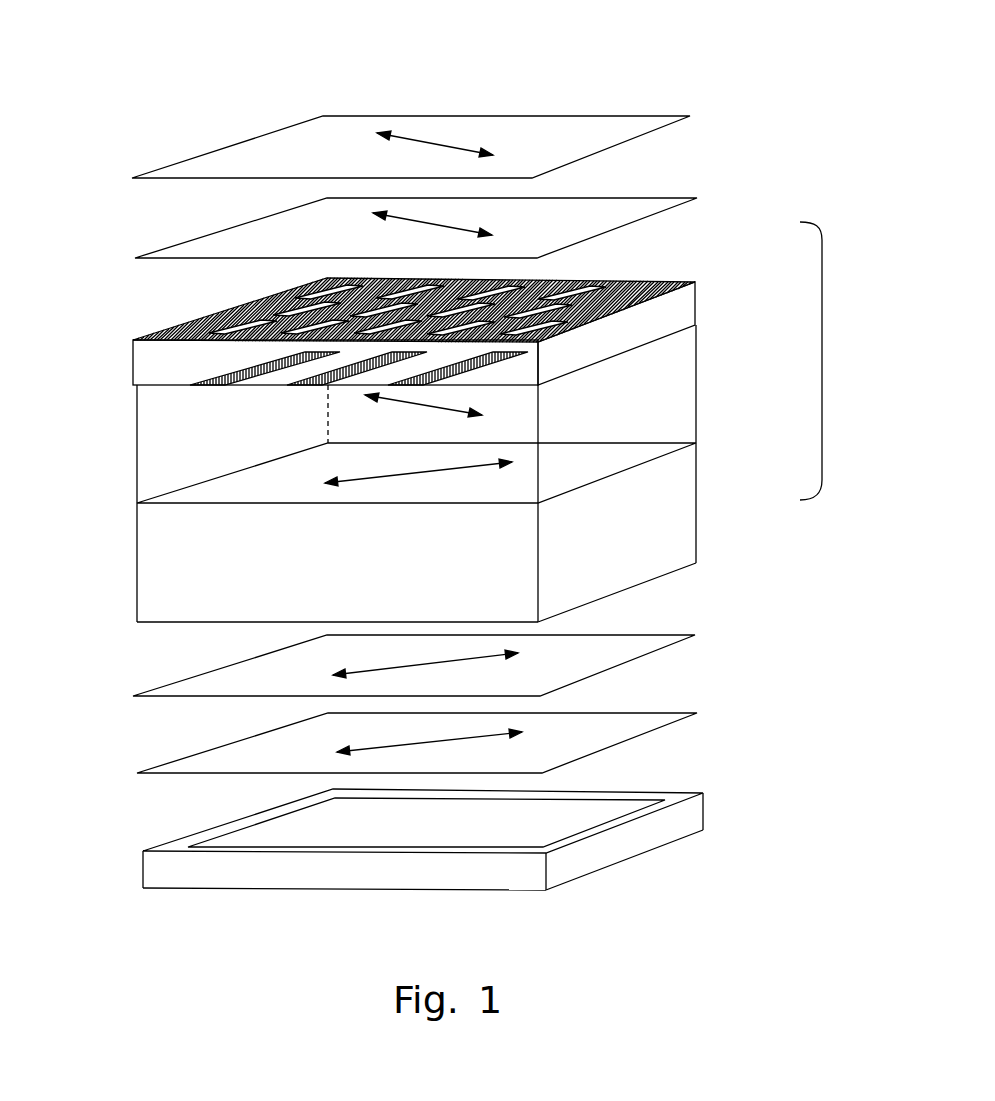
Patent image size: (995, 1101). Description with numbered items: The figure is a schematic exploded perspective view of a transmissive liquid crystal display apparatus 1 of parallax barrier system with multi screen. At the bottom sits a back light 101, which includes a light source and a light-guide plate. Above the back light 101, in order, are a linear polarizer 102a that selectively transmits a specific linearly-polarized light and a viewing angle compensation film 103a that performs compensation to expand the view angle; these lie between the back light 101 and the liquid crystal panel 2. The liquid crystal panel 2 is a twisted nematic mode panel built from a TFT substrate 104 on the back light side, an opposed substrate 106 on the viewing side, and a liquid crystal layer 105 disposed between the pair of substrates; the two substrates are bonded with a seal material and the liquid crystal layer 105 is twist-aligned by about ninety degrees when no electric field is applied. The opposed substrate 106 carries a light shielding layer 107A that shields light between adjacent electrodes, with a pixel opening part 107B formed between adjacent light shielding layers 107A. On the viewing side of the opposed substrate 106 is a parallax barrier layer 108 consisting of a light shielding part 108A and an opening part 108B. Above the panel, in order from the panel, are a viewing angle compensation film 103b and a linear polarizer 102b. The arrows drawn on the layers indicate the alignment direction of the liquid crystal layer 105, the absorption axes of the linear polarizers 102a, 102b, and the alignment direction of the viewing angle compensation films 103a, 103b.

The liquid crystal display apparatus 1 is at (452, 92).
The liquid crystal panel 2 is at (833, 361).
The back light 101 is at (683, 813).
The linear polarizer 102a is at (697, 714).
The linear polarizer 102b is at (690, 117).
The viewing angle compensation film 103a is at (695, 636).
The viewing angle compensation film 103b is at (697, 198).
The TFT substrate 104 is at (690, 517).
The liquid crystal layer 105 is at (673, 413).
The opposed substrate 106 is at (690, 313).
The light shielding layer 107A is at (200, 385).
The pixel opening part 107B is at (270, 385).
The parallax barrier layer 108 is at (423, 194).
The light shielding part 108A is at (175, 326).
The opening part 108B is at (517, 296).